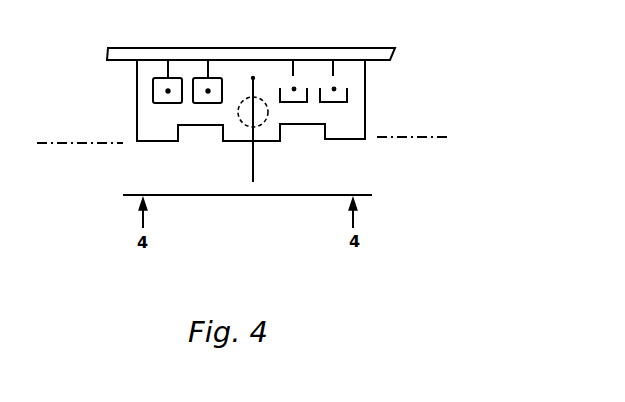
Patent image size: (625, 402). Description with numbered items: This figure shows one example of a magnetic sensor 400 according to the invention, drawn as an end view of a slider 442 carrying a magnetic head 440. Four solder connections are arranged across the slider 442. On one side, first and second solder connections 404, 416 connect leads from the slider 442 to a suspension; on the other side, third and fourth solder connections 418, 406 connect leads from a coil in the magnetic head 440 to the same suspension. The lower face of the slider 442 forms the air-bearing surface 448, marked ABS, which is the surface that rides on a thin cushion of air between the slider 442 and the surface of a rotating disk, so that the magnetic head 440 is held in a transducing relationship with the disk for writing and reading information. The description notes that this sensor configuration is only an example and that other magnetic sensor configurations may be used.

The magnetic sensor 400 is at (452, 185).
The first solder connection 404 is at (153, 78).
The second solder connection 416 is at (193, 78).
The third solder connection 418 is at (307, 75).
The fourth solder connection 406 is at (347, 75).
The magnetic head 440 is at (238, 150).
The slider 442 is at (137, 90).
The air-bearing surface 448 is at (62, 144).